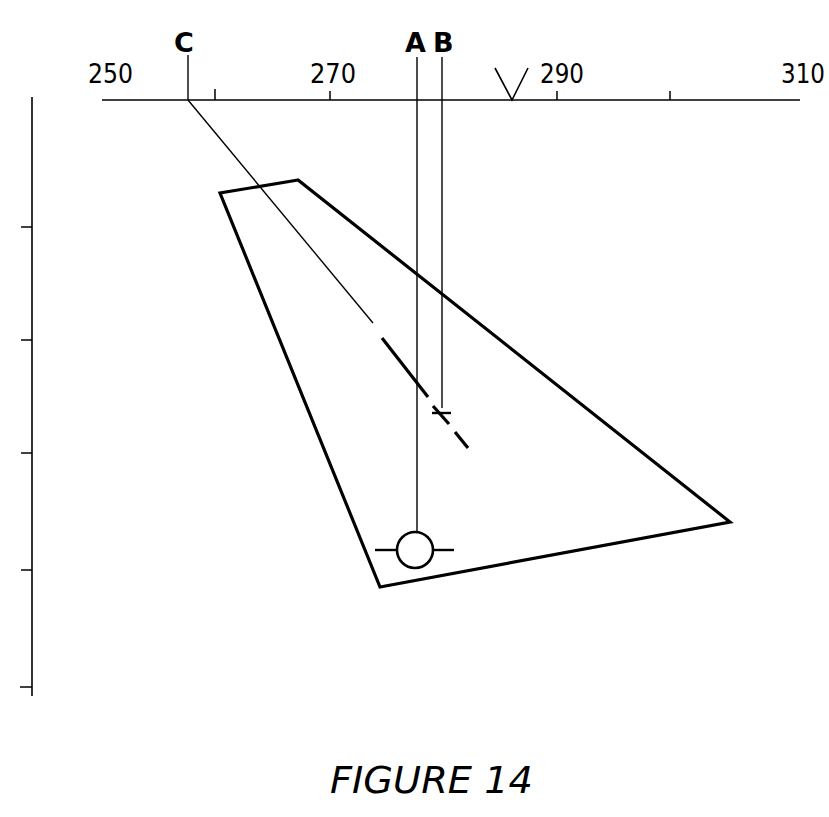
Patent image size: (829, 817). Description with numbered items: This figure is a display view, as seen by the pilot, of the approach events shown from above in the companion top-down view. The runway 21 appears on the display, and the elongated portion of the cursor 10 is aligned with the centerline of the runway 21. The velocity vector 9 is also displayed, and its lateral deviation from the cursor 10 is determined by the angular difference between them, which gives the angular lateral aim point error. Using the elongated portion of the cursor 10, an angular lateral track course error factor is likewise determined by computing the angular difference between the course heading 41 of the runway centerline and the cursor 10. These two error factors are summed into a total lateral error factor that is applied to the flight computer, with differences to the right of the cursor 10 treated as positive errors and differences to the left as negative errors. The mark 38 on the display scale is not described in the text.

The velocity vector 9 is at (398, 542).
The cursor 10 is at (408, 368).
The runway 21 is at (575, 395).
The reference mark on axis 38 is at (523, 88).
The course heading 41 is at (388, 340).